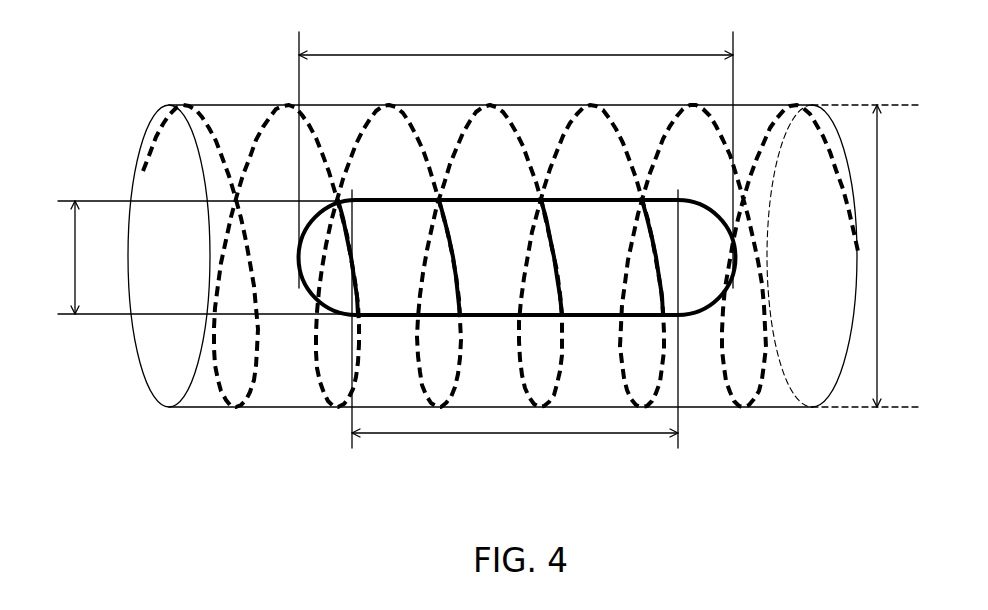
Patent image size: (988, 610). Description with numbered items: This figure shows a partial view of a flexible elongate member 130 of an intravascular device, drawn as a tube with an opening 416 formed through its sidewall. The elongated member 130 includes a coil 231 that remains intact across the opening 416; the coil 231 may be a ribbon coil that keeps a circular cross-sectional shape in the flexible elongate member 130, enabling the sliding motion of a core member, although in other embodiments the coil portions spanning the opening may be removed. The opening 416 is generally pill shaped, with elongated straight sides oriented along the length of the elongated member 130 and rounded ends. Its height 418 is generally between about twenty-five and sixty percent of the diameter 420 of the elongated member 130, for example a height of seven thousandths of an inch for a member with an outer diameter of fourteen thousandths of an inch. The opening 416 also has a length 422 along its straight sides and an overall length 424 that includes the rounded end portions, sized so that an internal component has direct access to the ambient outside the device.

The flexible elongate member 130 is at (193, 410).
The coil 231 is at (207, 116).
The opening 416 is at (510, 271).
The height 418 is at (73, 285).
The diameter 420 is at (878, 283).
The length 422 is at (462, 435).
The overall length 424 is at (579, 55).